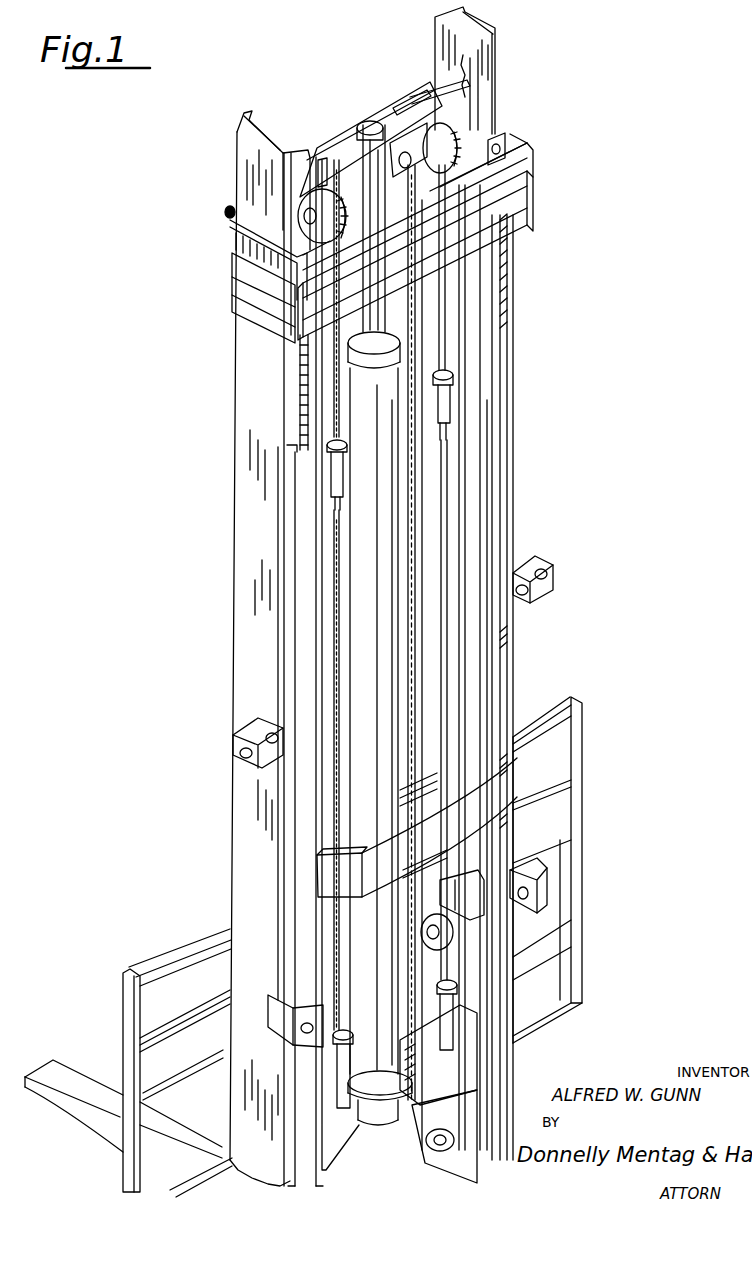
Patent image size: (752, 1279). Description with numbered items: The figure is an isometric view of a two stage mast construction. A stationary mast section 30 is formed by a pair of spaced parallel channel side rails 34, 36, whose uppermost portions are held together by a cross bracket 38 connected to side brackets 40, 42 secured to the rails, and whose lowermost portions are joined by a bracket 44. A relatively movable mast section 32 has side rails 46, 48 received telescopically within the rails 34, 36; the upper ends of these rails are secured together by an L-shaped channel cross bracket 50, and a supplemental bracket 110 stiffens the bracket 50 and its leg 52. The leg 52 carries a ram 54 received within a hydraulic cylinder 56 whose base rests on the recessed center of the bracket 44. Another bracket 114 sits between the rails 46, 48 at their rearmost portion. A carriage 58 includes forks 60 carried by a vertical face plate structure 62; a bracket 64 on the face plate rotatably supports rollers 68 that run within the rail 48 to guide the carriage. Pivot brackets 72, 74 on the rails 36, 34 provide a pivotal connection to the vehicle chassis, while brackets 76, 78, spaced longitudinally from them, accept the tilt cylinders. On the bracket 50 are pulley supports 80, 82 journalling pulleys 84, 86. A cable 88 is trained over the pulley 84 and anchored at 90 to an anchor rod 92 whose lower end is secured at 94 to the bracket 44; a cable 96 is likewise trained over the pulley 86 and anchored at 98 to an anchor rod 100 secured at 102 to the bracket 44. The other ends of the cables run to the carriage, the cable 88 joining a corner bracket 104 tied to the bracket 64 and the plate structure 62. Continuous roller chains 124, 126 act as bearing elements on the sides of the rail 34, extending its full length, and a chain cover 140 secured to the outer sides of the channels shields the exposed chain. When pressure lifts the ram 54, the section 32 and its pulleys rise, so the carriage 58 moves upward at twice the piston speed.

The stationary mast section 30 is at (224, 363).
The movable mast section 32 is at (232, 150).
The side rail 34 is at (228, 438).
The side rail 36 is at (507, 362).
The cross bracket 38 is at (510, 165).
The side bracket 40 is at (507, 128).
The side bracket 42 is at (258, 274).
The bracket 44 is at (490, 1060).
The side rail 46 is at (262, 150).
The side rail 48 is at (497, 48).
The cross bracket 50 is at (430, 88).
The leg 52 is at (353, 127).
The ram 54 is at (330, 157).
The hydraulic cylinder 56 is at (360, 565).
The carriage 58 is at (586, 806).
The forks 60 is at (67, 1073).
The face plate structure 62 is at (163, 950).
The bracket 64 is at (475, 955).
The rollers 68 is at (470, 877).
The pivot bracket 72 is at (548, 890).
The pivot bracket 74 is at (290, 1023).
The bracket 76 is at (548, 576).
The bracket 78 is at (236, 752).
The pulley support 80 is at (391, 123).
The pulley support 82 is at (318, 165).
The pulley 84 is at (463, 133).
The pulley 86 is at (305, 237).
The cable 88 is at (437, 337).
The anchor 90 is at (450, 400).
The anchor rod 92 is at (448, 555).
The securing point 94 is at (480, 1000).
The cable 96 is at (335, 390).
The anchor 98 is at (330, 472).
The anchor rod 100 is at (336, 658).
The securing point 102 is at (338, 1088).
The corner bracket 104 is at (438, 1055).
The supplemental bracket 110 is at (388, 80).
The bracket 114 is at (337, 875).
The roller chain 124 is at (226, 213).
The roller chain 126 is at (300, 378).
The chain cover 140 is at (300, 512).